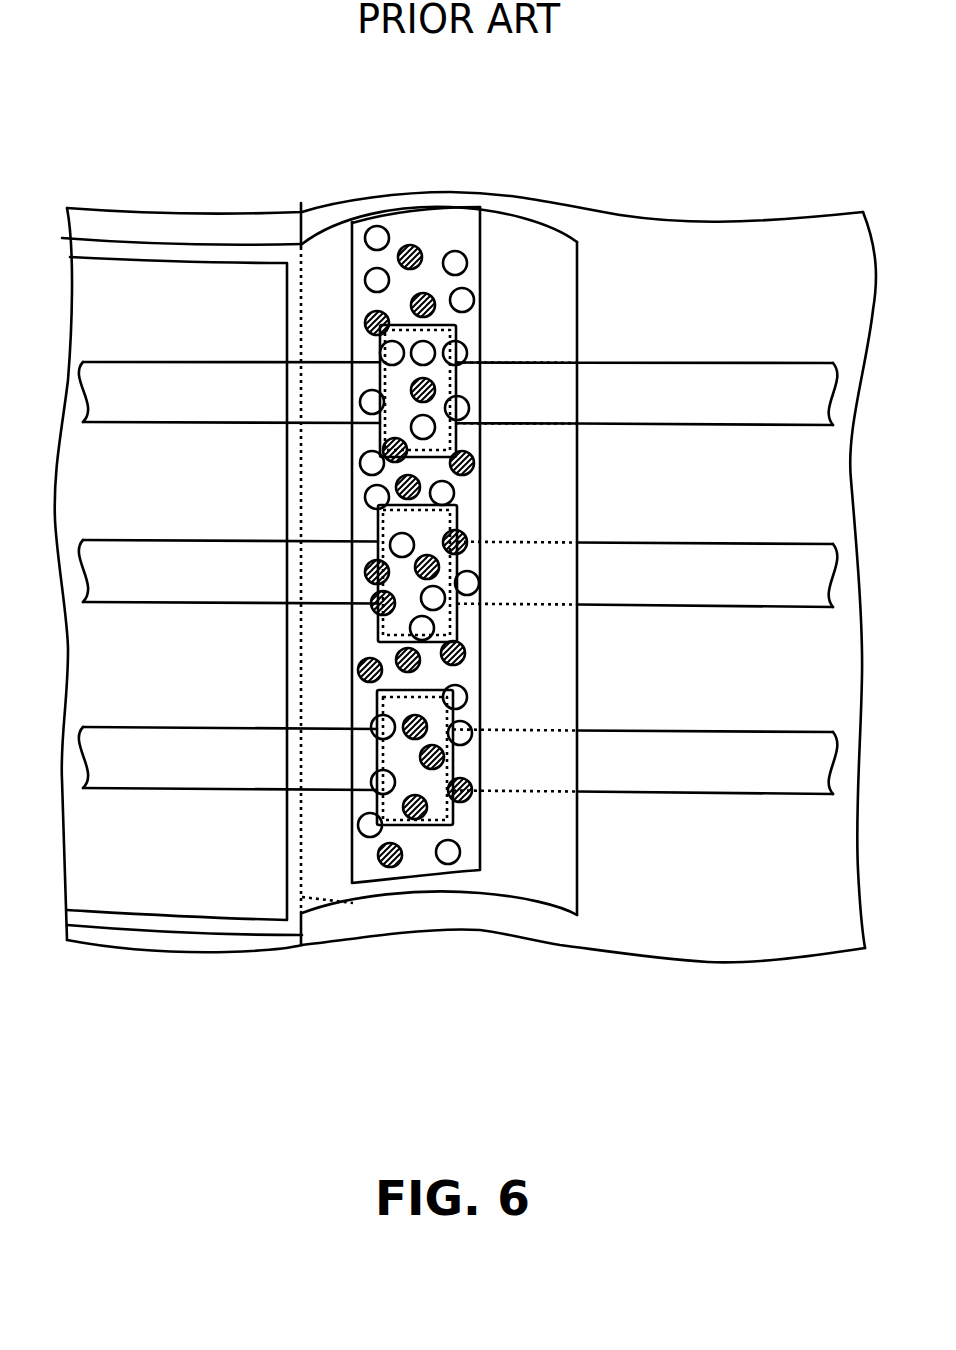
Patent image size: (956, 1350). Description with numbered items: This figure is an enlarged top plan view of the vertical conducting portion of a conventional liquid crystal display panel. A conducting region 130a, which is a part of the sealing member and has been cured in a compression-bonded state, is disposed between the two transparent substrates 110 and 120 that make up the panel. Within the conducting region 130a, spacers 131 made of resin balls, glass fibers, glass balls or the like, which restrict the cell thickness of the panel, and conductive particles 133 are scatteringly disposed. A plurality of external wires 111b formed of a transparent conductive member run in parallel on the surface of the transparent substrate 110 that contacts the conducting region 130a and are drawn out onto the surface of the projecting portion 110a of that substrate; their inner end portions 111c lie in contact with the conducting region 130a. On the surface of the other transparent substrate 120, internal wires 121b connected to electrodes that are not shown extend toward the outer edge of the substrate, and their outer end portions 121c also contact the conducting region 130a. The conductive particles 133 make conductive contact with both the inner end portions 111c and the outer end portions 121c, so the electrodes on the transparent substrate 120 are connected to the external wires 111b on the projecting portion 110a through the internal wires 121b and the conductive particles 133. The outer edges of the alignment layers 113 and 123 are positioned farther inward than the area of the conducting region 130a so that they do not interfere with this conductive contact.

The transparent substrate 110 is at (200, 213).
The projecting portion 110a is at (730, 247).
The external wires 111b is at (677, 585).
The inner end portions 111c is at (383, 757).
The alignment layer 113 is at (353, 903).
The transparent substrate 120 is at (120, 240).
The internal wires 121b is at (180, 557).
The outer end portions 121c is at (457, 378).
The alignment layer 123 is at (225, 952).
The conducting region 130a is at (480, 510).
The spacers 131 is at (364, 492).
The conductive particles 133 is at (364, 575).